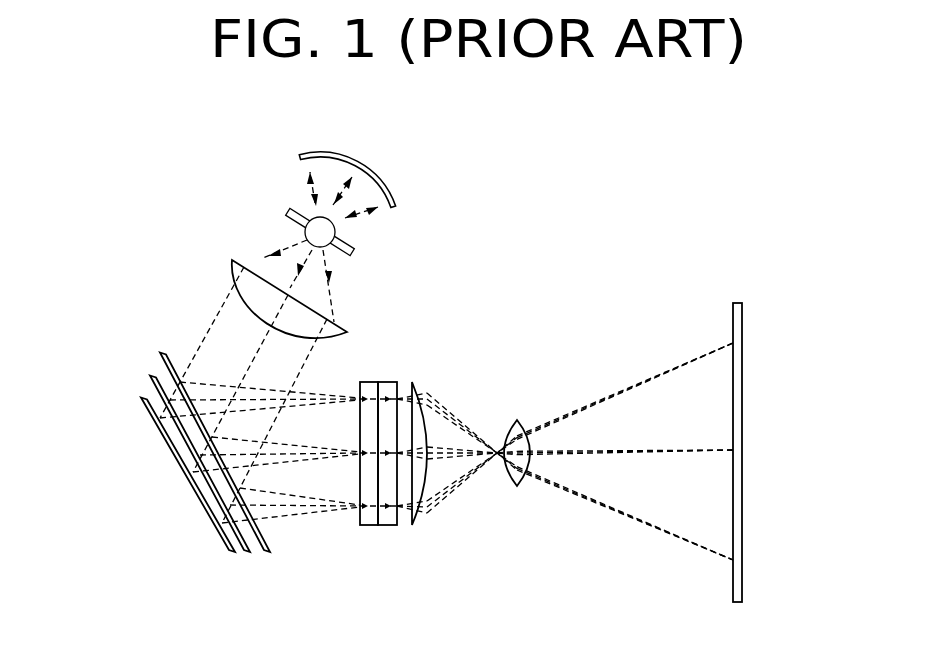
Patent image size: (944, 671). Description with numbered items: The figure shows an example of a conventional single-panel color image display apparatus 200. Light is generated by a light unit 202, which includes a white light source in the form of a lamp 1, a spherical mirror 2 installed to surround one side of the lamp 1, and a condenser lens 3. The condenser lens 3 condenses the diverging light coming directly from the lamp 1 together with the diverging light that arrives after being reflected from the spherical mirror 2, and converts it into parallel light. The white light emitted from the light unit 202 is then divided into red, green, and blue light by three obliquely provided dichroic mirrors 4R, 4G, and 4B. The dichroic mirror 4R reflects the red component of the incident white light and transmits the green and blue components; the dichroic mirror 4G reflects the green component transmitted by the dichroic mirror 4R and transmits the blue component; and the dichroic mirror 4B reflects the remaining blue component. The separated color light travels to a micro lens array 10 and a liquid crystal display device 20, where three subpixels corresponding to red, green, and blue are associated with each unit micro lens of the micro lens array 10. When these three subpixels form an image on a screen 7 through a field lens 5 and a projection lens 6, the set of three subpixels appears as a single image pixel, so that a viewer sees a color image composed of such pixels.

The lamp 1 is at (292, 213).
The spherical mirror 2 is at (329, 155).
The condenser lens 3 is at (230, 261).
The dichroic mirror 4R is at (162, 352).
The dichroic mirror 4G is at (152, 376).
The dichroic mirror 4B is at (140, 398).
The field lens 5 is at (420, 488).
The projection lens 6 is at (517, 487).
The screen 7 is at (742, 583).
The micro lens array 10 is at (367, 517).
The liquid crystal display device 20 is at (388, 521).
The single-panel color image display apparatus 200 is at (67, 266).
The light unit 202 is at (460, 286).